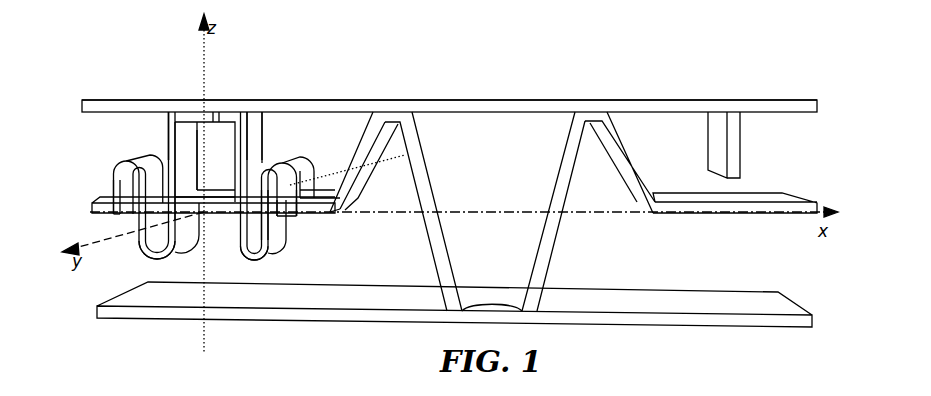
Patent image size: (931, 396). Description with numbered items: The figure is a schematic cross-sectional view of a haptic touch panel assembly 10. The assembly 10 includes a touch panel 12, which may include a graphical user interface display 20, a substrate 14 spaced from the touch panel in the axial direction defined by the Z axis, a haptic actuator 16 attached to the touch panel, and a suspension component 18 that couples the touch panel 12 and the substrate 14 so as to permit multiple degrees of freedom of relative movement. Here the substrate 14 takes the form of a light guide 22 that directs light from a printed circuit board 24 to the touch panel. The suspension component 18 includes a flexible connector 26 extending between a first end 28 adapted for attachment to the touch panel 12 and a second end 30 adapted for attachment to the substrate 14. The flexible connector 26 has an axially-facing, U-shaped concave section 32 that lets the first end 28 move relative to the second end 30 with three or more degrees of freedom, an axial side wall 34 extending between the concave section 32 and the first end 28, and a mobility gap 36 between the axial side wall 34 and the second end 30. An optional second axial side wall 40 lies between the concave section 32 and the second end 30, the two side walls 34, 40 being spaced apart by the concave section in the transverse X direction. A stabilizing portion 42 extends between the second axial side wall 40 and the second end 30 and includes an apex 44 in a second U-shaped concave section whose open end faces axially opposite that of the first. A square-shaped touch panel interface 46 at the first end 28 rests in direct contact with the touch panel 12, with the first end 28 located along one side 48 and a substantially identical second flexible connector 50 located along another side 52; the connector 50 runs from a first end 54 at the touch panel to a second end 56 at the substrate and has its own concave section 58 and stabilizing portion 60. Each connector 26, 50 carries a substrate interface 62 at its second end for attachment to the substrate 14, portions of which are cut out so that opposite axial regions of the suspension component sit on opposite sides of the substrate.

The haptic touch panel assembly 10 is at (147, 40).
The touch panel 12 is at (381, 100).
The substrate 14 is at (100, 208).
The haptic actuator 16 is at (738, 157).
The suspension component 18 is at (216, 112).
The graphical user interface display 20 is at (554, 100).
The light guide 22 is at (548, 234).
The printed circuit board 24 is at (620, 304).
The flexible connector 26 is at (248, 124).
The first end 28 is at (259, 113).
The second end 30 is at (289, 218).
The concave section 32 is at (270, 253).
The axial side wall 34 is at (237, 154).
The mobility gap 36 is at (260, 170).
The second axial side wall 40 is at (272, 199).
The stabilizing portion 42 is at (308, 174).
The apex 44 is at (301, 166).
The touch panel interface 46 is at (183, 112).
The side 48 is at (244, 112).
The flexible connector 50 is at (190, 147).
The side 52 is at (168, 112).
The first end 54 is at (168, 127).
The second end 56 is at (123, 205).
The concave section 58 is at (141, 251).
The stabilizing portion 60 is at (128, 164).
The substrate interface 62 is at (322, 212).